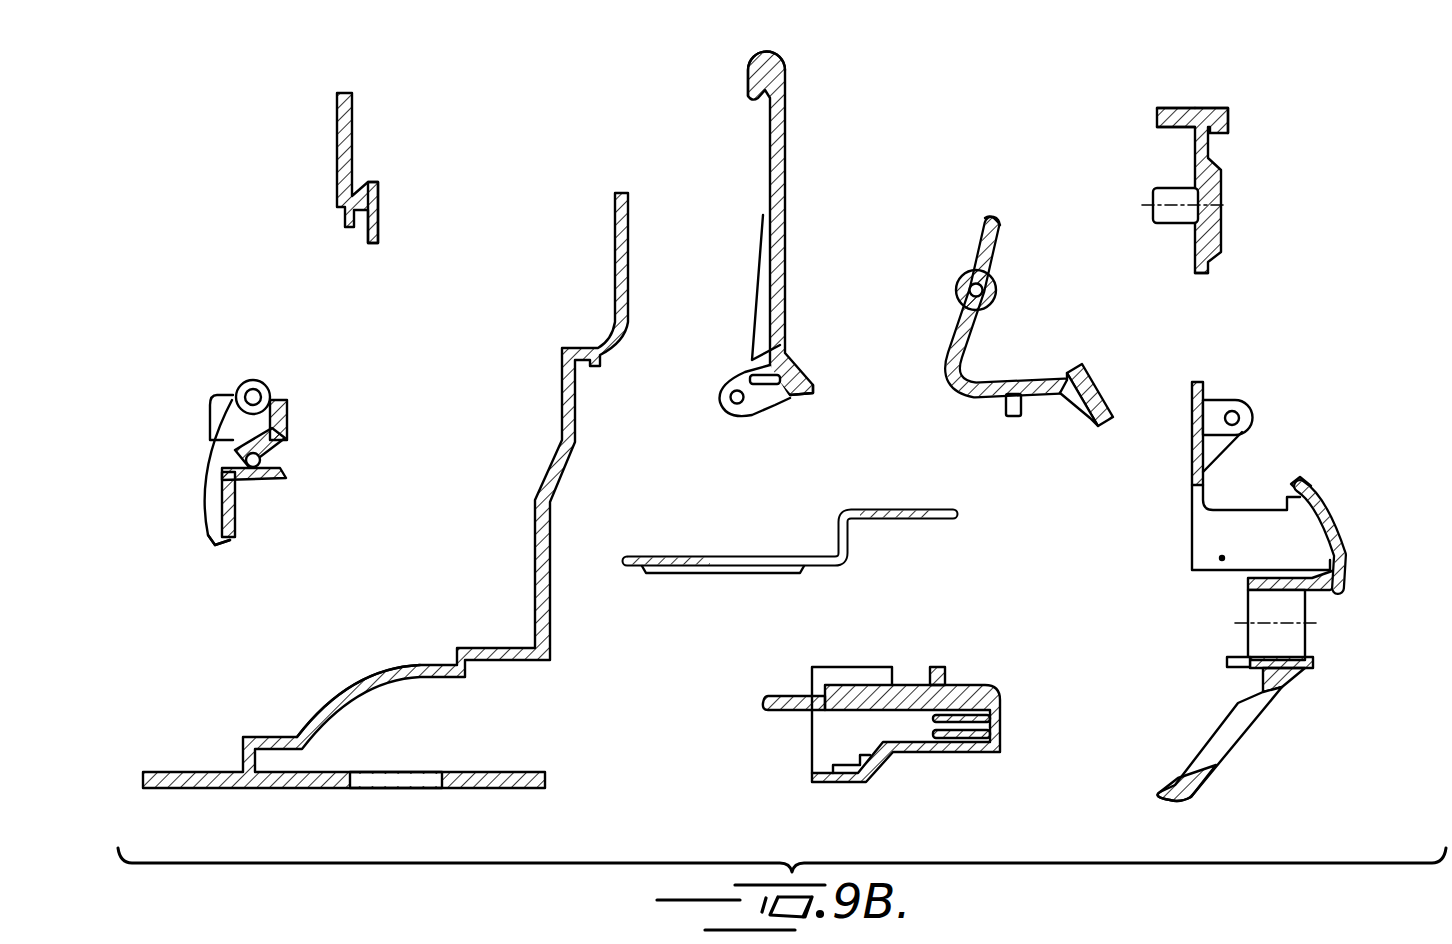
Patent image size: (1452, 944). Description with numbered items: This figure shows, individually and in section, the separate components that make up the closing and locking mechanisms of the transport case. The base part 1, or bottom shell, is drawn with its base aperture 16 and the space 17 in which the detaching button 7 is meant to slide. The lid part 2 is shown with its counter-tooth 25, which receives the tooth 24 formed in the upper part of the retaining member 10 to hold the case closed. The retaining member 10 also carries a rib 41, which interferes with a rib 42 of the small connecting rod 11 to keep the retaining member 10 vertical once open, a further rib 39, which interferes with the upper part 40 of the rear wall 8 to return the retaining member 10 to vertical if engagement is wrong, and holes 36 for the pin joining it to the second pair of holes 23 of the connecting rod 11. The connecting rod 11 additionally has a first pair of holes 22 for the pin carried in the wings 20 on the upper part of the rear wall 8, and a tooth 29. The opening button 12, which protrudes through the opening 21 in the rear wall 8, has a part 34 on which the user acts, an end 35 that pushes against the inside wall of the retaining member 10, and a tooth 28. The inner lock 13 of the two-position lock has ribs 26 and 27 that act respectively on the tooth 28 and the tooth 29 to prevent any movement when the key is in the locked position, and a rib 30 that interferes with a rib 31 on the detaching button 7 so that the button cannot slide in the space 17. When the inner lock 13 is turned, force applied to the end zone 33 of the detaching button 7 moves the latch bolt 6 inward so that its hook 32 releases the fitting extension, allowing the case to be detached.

The base part 1 is at (196, 772).
The lid part 2 is at (337, 123).
The latch bolt 6 is at (848, 545).
The detaching button 7 is at (955, 752).
The rear wall 8 is at (1290, 682).
The retaining member 10 is at (787, 148).
The connecting rod 11 is at (290, 412).
The opening button 12 is at (950, 340).
The inner lock 13 is at (1222, 172).
The base aperture 16 is at (380, 790).
The space 17 is at (400, 705).
The wings 20 is at (1240, 402).
The opening 21 is at (1347, 548).
The first pair of holes 22 is at (250, 392).
The second pair of holes 23 is at (262, 482).
The tooth 24 is at (748, 82).
The counter-tooth 25 is at (378, 192).
The rib of the inner lock 26 is at (1228, 112).
The rib of the inner lock 27 is at (1158, 108).
The tooth of the opening button 28 is at (1017, 417).
The tooth of the connecting rod 29 is at (224, 542).
The rib of the inner lock 30 is at (1203, 275).
The rib on the detaching button 31 is at (948, 668).
The hook 32 is at (682, 557).
The end zone of the detaching button 33 is at (1002, 720).
The part of the opening button 34 is at (1085, 378).
The end of the opening button 35 is at (1000, 232).
The holes 36 is at (731, 400).
The rib of the retaining member 39 is at (795, 400).
The upper part of the rear wall 40 is at (1305, 480).
The rib of the retaining member 41 is at (752, 365).
The rib of the connecting rod 42 is at (275, 478).